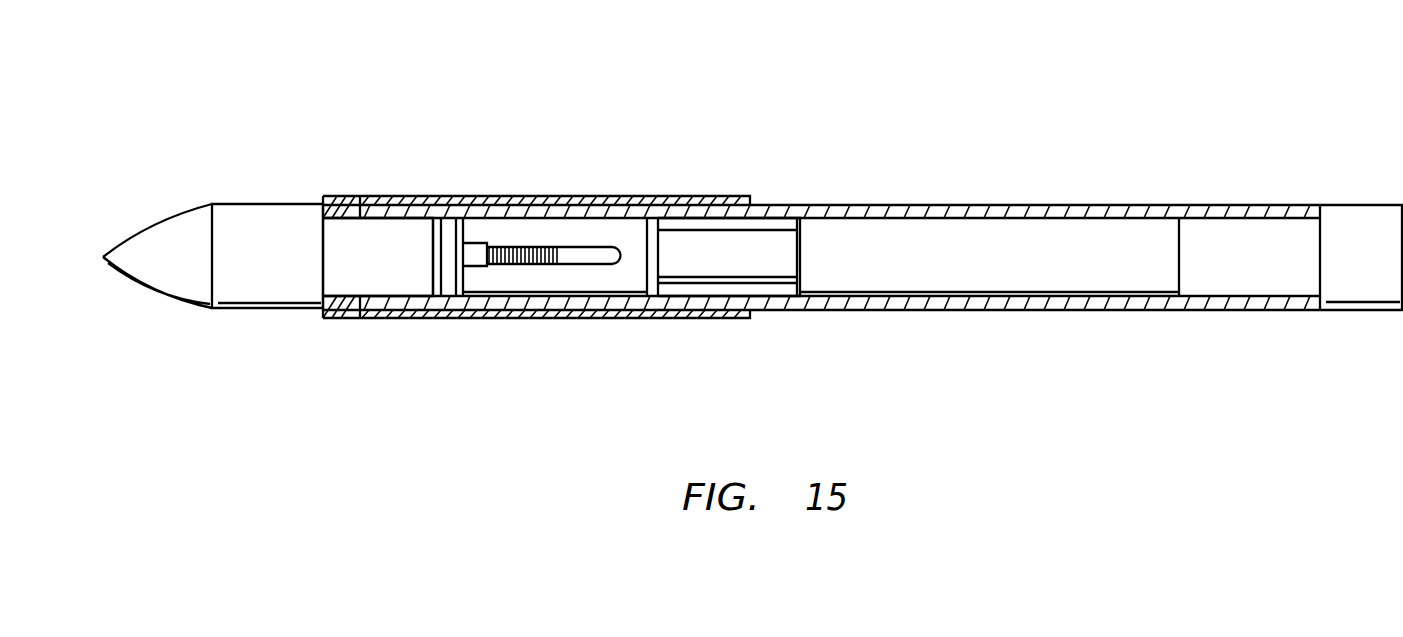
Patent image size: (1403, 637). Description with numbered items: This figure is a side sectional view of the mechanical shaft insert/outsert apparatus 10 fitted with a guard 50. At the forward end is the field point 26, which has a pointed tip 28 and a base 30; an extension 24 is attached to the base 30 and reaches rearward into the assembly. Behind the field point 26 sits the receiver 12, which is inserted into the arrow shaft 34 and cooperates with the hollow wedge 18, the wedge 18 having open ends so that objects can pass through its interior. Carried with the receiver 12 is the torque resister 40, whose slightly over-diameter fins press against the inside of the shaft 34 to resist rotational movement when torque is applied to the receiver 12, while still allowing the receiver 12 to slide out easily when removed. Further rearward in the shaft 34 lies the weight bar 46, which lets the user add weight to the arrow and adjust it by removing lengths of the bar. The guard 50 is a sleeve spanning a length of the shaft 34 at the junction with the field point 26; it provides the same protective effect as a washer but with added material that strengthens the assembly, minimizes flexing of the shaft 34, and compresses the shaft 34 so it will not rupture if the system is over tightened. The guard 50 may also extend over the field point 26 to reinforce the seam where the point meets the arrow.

The mechanical shaft insert/outsert apparatus 10 is at (835, 73).
The receiver 12 is at (622, 283).
The wedge 18 is at (455, 285).
The extension 24 is at (510, 245).
The field point 26 is at (170, 280).
The tip 28 is at (103, 255).
The base 30 is at (253, 224).
The shaft 34 is at (1246, 205).
The torque resister 40 is at (760, 245).
The weight bar 46 is at (1015, 245).
The guard 50 is at (722, 197).